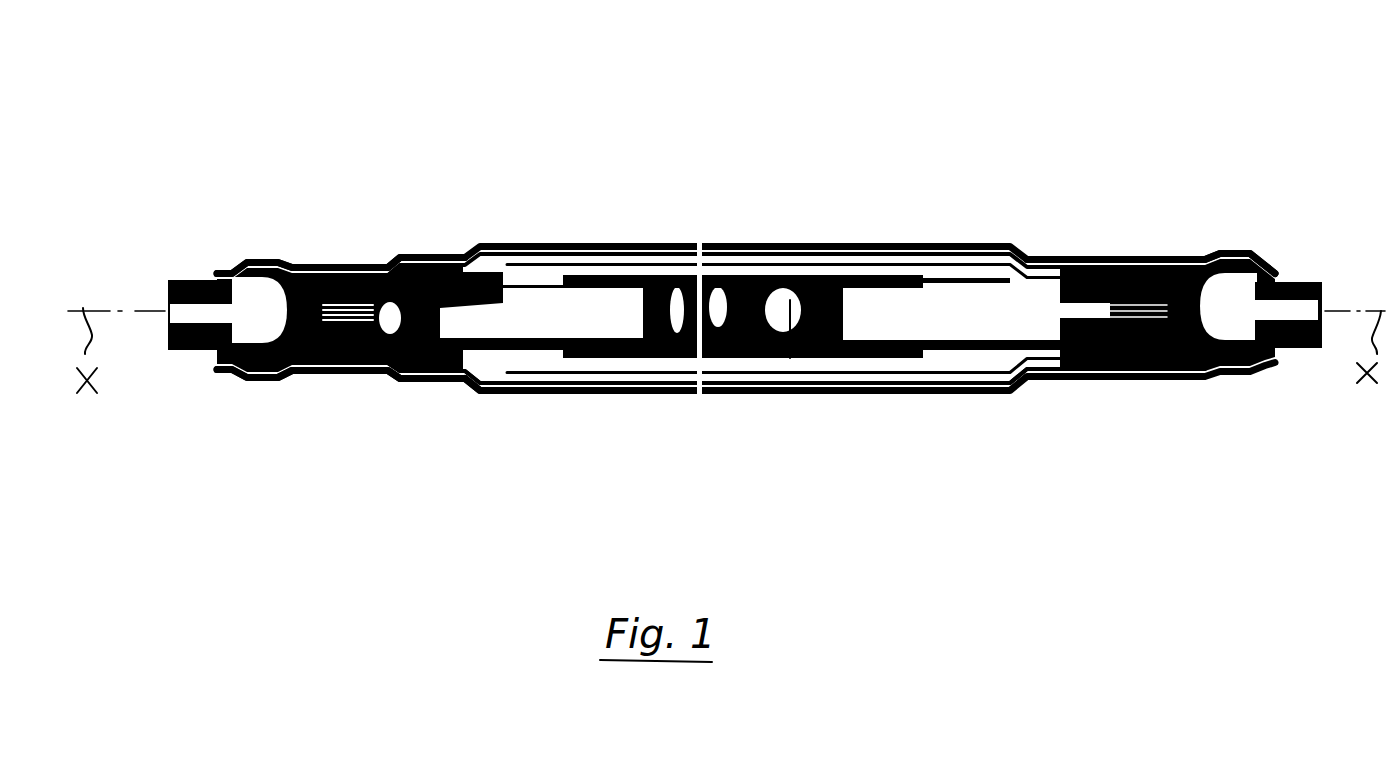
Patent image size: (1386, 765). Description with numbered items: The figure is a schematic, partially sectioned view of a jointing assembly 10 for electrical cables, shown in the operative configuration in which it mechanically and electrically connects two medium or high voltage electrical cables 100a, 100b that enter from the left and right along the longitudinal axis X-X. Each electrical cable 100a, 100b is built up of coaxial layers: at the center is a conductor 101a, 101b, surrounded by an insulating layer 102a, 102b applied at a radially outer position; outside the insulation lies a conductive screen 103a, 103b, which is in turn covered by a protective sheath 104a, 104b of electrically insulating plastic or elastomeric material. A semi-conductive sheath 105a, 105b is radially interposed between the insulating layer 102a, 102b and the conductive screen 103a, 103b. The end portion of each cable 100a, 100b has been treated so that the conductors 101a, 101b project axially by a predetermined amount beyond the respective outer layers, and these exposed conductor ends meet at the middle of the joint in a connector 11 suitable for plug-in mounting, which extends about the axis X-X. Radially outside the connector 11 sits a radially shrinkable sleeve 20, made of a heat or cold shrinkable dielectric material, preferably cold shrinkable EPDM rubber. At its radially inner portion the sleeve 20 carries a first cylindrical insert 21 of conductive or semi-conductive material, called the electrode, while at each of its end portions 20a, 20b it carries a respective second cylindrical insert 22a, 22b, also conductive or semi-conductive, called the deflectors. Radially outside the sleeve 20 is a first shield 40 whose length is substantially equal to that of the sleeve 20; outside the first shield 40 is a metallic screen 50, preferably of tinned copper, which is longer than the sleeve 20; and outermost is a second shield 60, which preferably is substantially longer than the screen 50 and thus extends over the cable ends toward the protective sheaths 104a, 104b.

The jointing assembly 10 is at (749, 222).
The connector 11 is at (790, 358).
The radially shrinkable sleeve 20 is at (537, 357).
The end portion of the sleeve 20a is at (1105, 410).
The end portion of the sleeve 20b is at (397, 405).
The first cylindrical insert (electrode) 21 is at (622, 360).
The second cylindrical insert (deflector) 22a is at (1035, 375).
The second cylindrical insert (deflector) 22b is at (418, 360).
The first shield 40 is at (473, 360).
The metallic screen 50 is at (727, 392).
The second shield 60 is at (285, 373).
The electrical cable 100a is at (981, 263).
The electrical cable 100b is at (536, 264).
The conductor 101a is at (838, 280).
The conductor 101b is at (658, 278).
The insulating layer 102a is at (890, 307).
The insulating layer 102b is at (583, 307).
The conductive screen 103a is at (1126, 268).
The conductive screen 103b is at (337, 266).
The protective sheath 104a is at (1287, 282).
The protective sheath 104b is at (188, 283).
The semi-conductive sheath 105a is at (1081, 275).
The semi-conductive sheath 105b is at (388, 268).